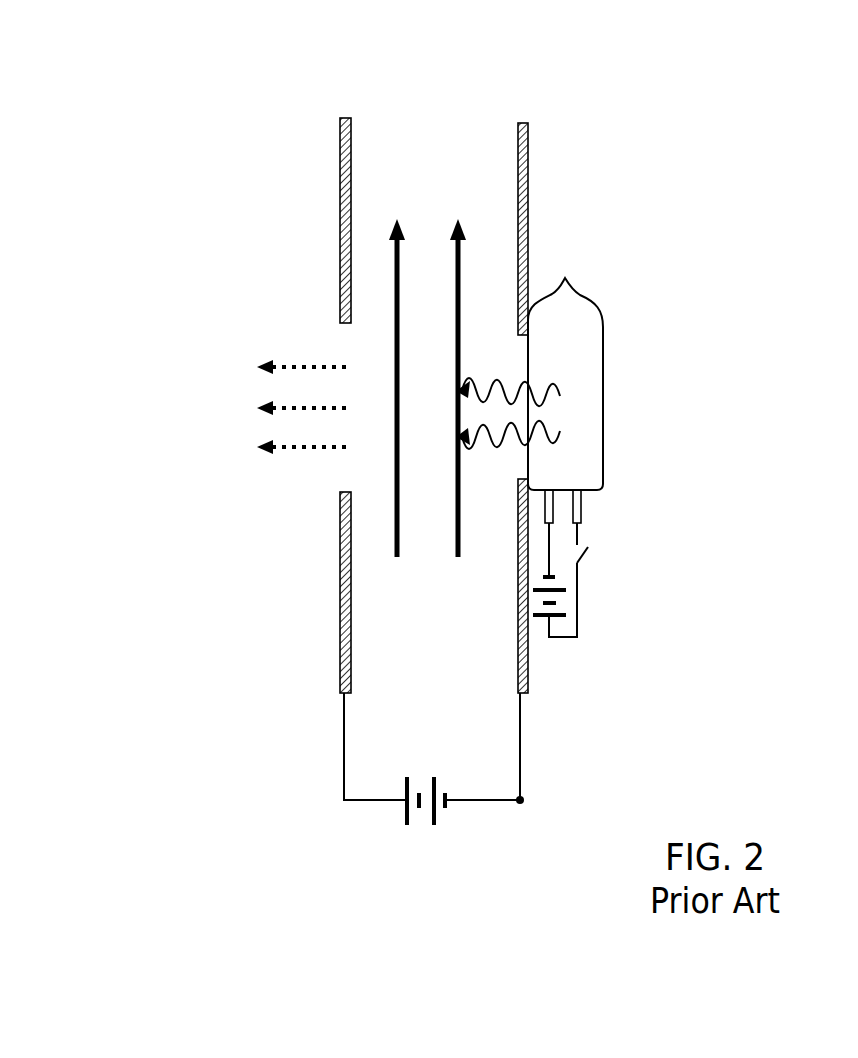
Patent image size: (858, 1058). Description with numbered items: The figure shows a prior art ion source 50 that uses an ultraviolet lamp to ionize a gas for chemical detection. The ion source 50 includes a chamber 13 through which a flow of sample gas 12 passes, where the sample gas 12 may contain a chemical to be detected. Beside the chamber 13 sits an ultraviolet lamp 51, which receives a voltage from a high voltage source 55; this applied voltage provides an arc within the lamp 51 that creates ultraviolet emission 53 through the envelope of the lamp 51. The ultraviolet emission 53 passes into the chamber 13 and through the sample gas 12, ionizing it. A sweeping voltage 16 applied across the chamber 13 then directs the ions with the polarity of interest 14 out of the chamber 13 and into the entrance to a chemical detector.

The flow of sample gas 12 is at (458, 217).
The chamber 13 is at (385, 175).
The ions with the polarity of interest 14 is at (297, 367).
The sweeping voltage 16 is at (430, 823).
The ion source 50 is at (771, 252).
The ultraviolet lamp 51 is at (565, 278).
The ultraviolet emission 53 is at (478, 445).
The high voltage source 55 is at (557, 577).